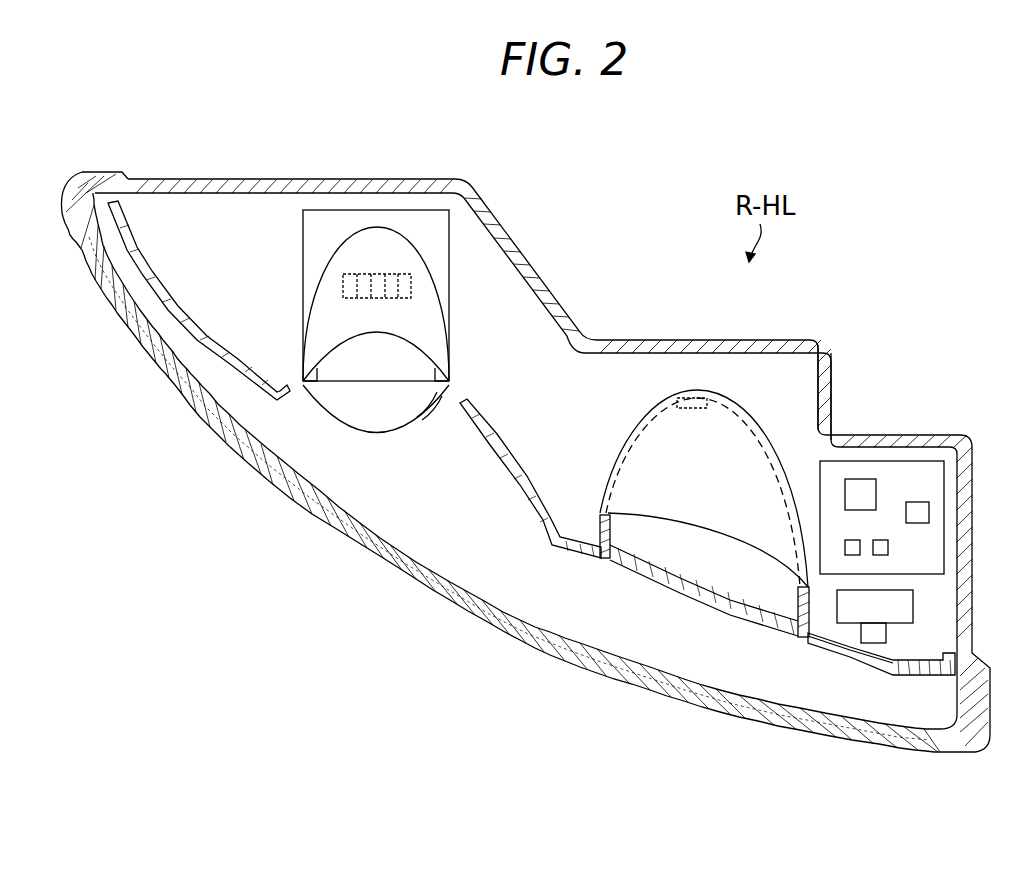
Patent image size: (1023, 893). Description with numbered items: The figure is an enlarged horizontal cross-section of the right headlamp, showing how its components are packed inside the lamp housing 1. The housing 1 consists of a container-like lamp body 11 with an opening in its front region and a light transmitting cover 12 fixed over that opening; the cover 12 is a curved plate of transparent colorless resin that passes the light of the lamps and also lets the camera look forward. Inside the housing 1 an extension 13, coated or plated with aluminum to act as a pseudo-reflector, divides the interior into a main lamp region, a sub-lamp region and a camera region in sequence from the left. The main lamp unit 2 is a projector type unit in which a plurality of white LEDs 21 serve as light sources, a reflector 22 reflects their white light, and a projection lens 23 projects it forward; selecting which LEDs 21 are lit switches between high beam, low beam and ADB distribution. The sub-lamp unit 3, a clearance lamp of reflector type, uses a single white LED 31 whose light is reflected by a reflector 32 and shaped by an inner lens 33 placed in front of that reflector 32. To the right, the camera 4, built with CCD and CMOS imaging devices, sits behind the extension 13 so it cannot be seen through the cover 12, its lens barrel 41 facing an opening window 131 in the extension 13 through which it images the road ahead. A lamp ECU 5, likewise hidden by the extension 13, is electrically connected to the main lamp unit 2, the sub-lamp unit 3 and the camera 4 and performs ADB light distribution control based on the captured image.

The lamp housing 1 is at (545, 275).
The lamp body 11 is at (833, 392).
The light transmitting cover 12 is at (458, 598).
The extension 13 is at (165, 297).
The opening window 131 is at (882, 667).
The main lamp unit 2 is at (354, 296).
The white LEDs 21 is at (343, 287).
The reflector 22 is at (320, 338).
The projection lens 23 is at (417, 412).
The sub-lamp unit 3 is at (687, 467).
The white LED 31 is at (683, 410).
The reflector 32 is at (615, 465).
The inner lens 33 is at (647, 580).
The camera 4 is at (917, 610).
The lens barrel 41 is at (887, 638).
The lamp ECU 5 is at (947, 508).